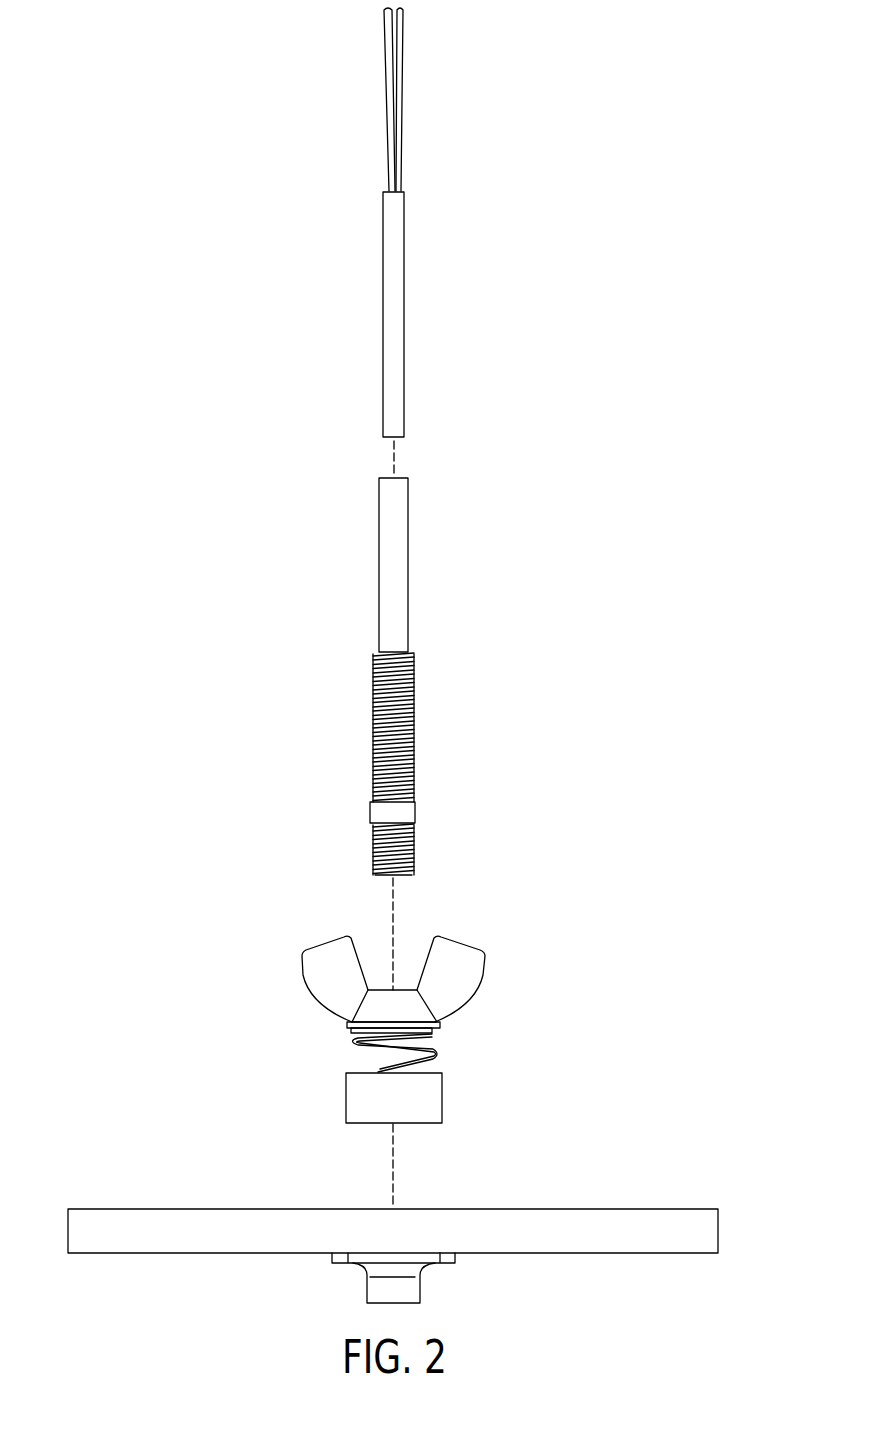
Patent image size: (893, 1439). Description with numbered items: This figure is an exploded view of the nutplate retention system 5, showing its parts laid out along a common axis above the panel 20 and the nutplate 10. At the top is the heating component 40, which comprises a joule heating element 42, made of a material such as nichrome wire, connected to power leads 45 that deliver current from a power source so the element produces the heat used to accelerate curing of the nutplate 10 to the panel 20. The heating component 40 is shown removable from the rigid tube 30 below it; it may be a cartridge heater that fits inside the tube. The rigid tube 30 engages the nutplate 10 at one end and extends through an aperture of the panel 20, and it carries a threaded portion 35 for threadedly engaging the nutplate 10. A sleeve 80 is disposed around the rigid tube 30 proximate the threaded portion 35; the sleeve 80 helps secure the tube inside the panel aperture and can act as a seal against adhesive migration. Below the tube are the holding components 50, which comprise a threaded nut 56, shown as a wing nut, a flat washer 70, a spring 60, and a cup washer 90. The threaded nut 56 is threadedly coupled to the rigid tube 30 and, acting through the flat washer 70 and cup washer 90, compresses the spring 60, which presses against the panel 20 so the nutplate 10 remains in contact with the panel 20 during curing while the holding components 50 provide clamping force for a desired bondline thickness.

The nutplate retention system 5 is at (550, 215).
The heating component 40 is at (348, 280).
The power leads 45 is at (400, 30).
The joule heating element 42 is at (395, 263).
The rigid tube 30 is at (395, 585).
The threaded portion 35 is at (413, 723).
The sleeve 80 is at (410, 813).
The holding components 50 is at (280, 925).
The threaded nut 56 is at (478, 966).
The flat washer 70 is at (442, 1028).
The spring 60 is at (348, 1040).
The cup washer 90 is at (444, 1098).
The panel 20 is at (700, 1228).
The nutplate 10 is at (420, 1290).